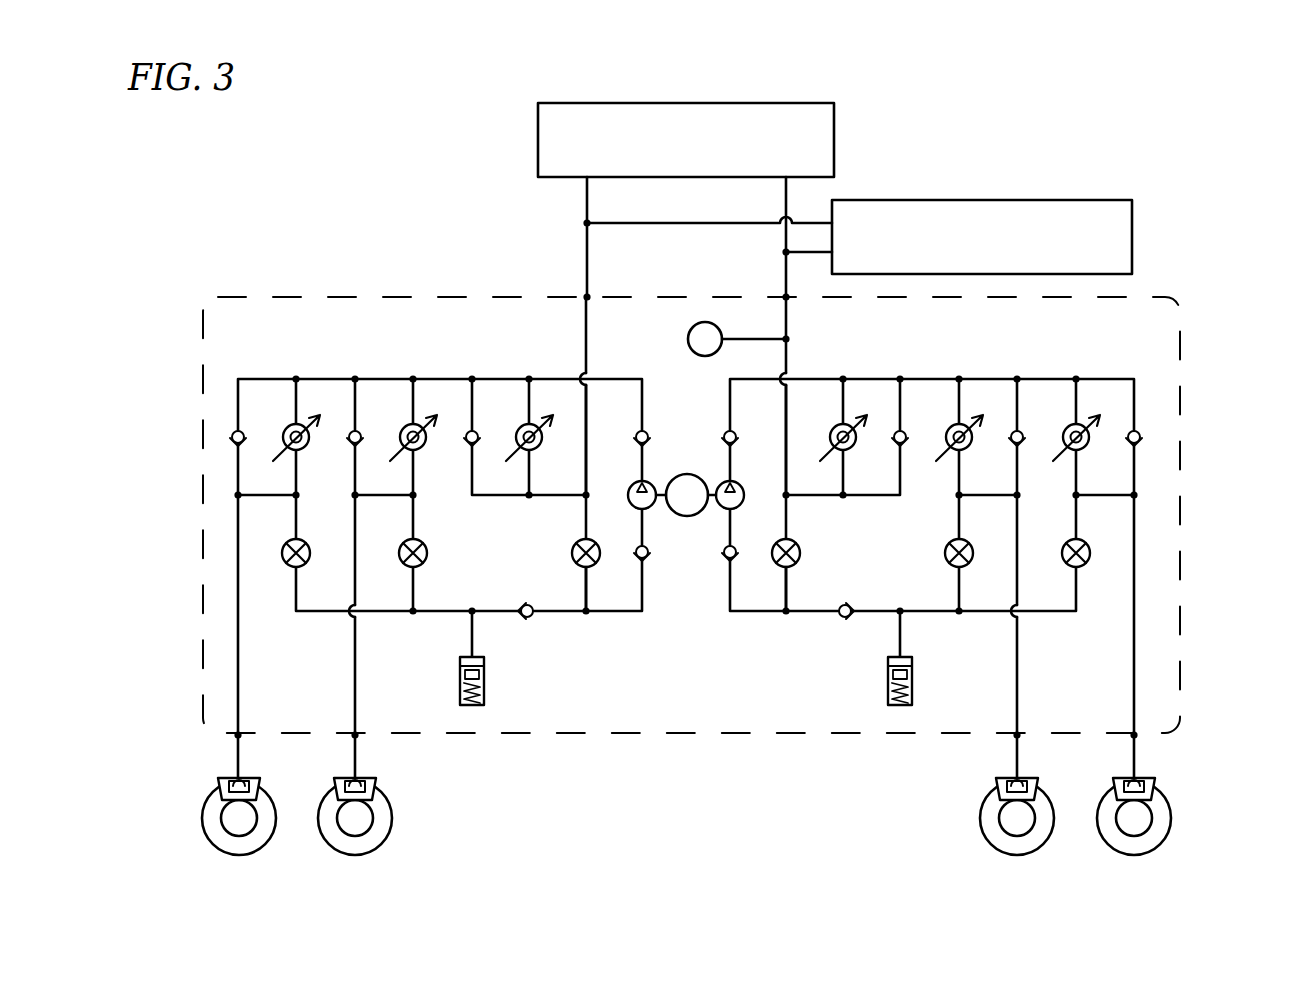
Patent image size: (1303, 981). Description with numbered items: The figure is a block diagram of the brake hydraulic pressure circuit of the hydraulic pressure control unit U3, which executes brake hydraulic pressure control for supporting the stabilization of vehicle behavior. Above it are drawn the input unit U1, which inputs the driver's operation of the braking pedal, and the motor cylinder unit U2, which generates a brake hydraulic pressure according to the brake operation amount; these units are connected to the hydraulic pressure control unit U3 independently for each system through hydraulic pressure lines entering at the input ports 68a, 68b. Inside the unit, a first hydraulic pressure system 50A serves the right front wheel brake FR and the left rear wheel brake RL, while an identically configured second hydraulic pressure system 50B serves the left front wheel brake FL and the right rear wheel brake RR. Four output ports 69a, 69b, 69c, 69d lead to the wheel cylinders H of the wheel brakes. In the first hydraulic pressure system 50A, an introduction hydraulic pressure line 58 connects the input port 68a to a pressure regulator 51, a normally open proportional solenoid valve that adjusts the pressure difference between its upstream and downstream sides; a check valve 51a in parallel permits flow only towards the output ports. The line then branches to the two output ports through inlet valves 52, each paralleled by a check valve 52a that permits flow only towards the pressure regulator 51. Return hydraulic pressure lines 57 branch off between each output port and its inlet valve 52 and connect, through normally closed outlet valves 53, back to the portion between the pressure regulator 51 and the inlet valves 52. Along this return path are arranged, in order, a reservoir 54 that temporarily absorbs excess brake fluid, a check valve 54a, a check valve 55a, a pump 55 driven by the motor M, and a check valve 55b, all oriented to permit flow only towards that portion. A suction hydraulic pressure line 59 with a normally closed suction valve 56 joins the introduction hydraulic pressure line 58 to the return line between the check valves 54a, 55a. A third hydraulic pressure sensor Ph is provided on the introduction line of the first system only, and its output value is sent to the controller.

The input unit U1 is at (848, 148).
The motor cylinder unit U2 is at (1069, 192).
The hydraulic pressure control unit U3 is at (1195, 354).
The first hydraulic pressure system 50A is at (1051, 354).
The second hydraulic pressure system 50B is at (317, 354).
The pressure regulator 51 is at (540, 450).
The check valve 51a is at (478, 437).
The inlet valve 52 is at (307, 450).
The check valve 52a is at (248, 437).
The outlet valve 53 is at (284, 545).
The reservoir 54 is at (458, 680).
The check valve 54a is at (528, 619).
The pump 55 is at (630, 489).
The check valve 55a is at (632, 551).
The check valve 55b is at (632, 436).
The suction valve 56 is at (573, 553).
The return hydraulic pressure line 57 is at (612, 378).
The introduction hydraulic pressure line 58 is at (584, 398).
The suction hydraulic pressure line 59 is at (584, 580).
The input port 68a is at (783, 296).
The input port 68b is at (584, 296).
The output port 69a is at (1138, 738).
The output port 69b is at (1021, 738).
The output port 69c is at (359, 738).
The output port 69d is at (242, 738).
The wheel cylinder H is at (258, 778).
The left front wheel brake FL is at (272, 838).
The right rear wheel brake RR is at (388, 838).
The left rear wheel brake RL is at (1050, 838).
The right front wheel brake FR is at (1167, 838).
The third hydraulic pressure sensor Ph is at (739, 339).
The motor M is at (686, 495).